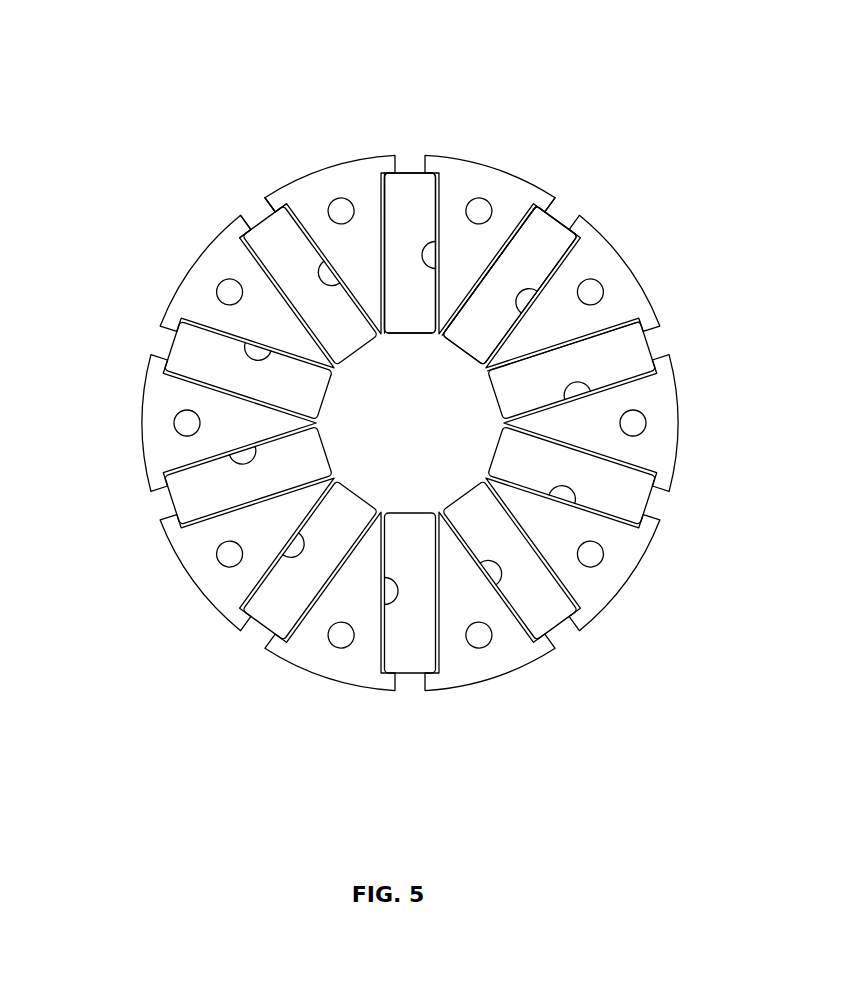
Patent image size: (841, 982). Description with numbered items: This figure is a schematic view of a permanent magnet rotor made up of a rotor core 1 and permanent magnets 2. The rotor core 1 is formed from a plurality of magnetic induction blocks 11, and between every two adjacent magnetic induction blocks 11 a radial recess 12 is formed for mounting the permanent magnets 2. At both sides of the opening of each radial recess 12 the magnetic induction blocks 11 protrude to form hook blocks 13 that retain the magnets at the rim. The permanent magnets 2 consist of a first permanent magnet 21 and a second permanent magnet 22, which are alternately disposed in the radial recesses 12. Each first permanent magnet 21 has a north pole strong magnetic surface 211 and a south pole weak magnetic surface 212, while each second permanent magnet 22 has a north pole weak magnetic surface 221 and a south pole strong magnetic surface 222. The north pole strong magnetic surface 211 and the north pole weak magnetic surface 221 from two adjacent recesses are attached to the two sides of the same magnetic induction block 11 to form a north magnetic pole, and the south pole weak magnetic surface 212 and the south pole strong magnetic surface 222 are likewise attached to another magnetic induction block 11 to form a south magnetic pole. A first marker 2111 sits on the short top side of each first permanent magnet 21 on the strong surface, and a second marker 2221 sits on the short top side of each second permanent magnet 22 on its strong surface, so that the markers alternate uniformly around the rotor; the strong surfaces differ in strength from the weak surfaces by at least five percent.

The rotor core 1 is at (363, 373).
The permanent magnets 2 is at (391, 391).
The magnetic induction block 11 is at (332, 190).
The radial recess 12 is at (411, 160).
The hook block 13 is at (235, 217).
The first permanent magnet 21 is at (406, 391).
The second permanent magnet 22 is at (378, 391).
The north pole strong magnetic surface 211 is at (435, 240).
The south pole weak magnetic surface 212 is at (385, 178).
The first marker 2111 is at (433, 253).
The north pole weak magnetic surface 221 is at (537, 228).
The south pole strong magnetic surface 222 is at (560, 243).
The second marker 2221 is at (318, 268).